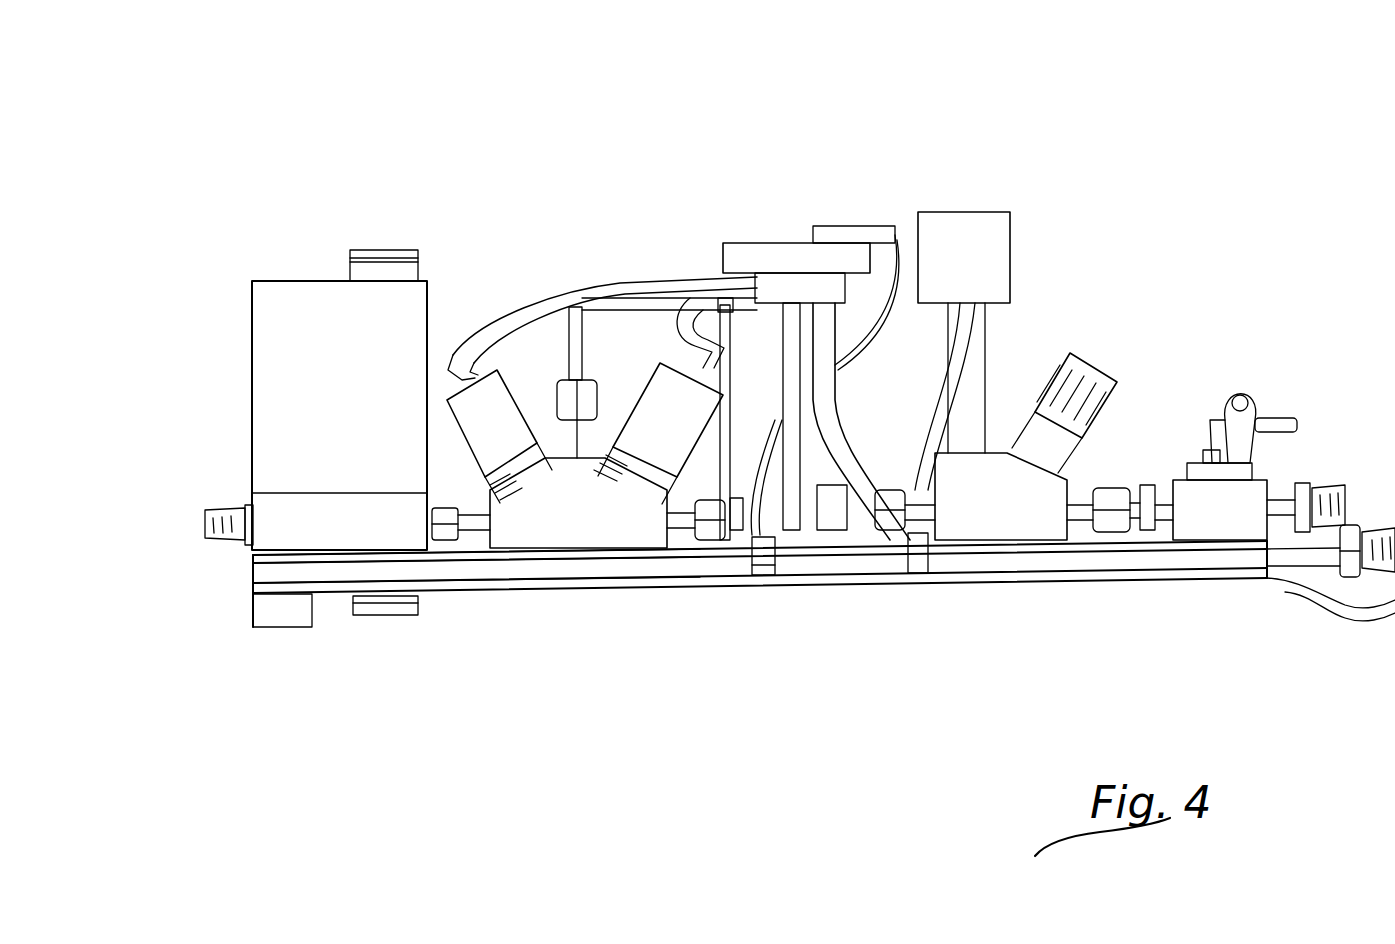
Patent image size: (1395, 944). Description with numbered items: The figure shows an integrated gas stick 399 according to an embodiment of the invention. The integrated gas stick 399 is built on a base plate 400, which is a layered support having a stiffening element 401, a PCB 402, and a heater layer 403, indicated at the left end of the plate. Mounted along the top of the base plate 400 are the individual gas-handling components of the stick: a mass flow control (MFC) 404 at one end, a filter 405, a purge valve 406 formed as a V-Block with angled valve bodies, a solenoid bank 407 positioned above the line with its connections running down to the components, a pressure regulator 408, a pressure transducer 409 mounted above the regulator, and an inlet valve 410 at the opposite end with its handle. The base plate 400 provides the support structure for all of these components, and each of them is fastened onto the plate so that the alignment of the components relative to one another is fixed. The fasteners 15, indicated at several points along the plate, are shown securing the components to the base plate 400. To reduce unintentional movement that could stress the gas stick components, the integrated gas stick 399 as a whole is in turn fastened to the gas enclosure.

The integrated gas stick 399 is at (432, 82).
The base plate 400 is at (1120, 565).
The stiffening element 401 is at (236, 578).
The PCB 402 is at (238, 598).
The heater layer 403 is at (238, 560).
The mass flow control 404 is at (350, 368).
The filter 405 is at (770, 476).
The purge valve 406 is at (605, 522).
The solenoid bank 407 is at (808, 273).
The pressure regulator 408 is at (1015, 519).
The pressure transducer 409 is at (990, 266).
The inlet valve 410 is at (1240, 526).
The clamps 15 is at (895, 594).